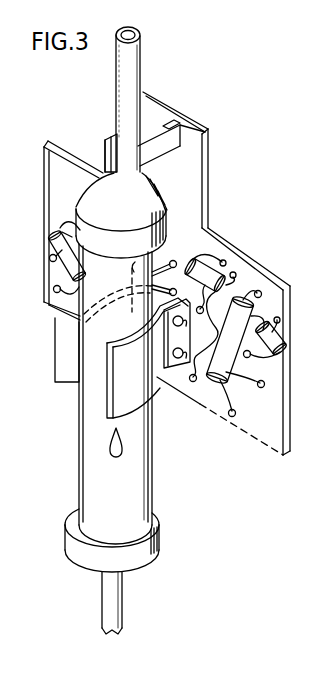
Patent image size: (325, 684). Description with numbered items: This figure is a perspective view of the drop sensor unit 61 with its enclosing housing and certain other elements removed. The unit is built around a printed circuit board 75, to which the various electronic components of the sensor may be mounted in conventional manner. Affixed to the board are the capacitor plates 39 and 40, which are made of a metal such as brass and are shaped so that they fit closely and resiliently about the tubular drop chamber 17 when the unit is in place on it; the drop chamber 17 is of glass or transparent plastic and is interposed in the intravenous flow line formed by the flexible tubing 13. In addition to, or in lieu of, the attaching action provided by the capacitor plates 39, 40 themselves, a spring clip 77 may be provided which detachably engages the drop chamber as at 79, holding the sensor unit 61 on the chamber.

The flexible tubing 13 is at (107, 602).
The tubular drop chamber 17 is at (86, 471).
The capacitor plate 39 is at (140, 387).
The capacitor plate 40 is at (60, 352).
The drop sensor unit 61 is at (222, 186).
The printed circuit board 75 is at (254, 271).
The spring clip 77 is at (162, 145).
The engagement point of spring clip on drop chamber 79 is at (164, 208).